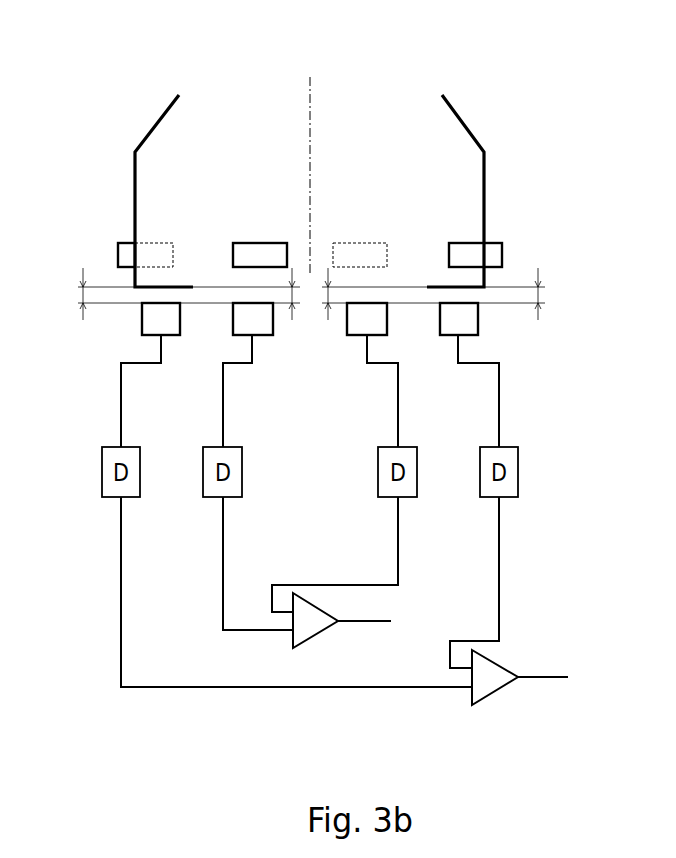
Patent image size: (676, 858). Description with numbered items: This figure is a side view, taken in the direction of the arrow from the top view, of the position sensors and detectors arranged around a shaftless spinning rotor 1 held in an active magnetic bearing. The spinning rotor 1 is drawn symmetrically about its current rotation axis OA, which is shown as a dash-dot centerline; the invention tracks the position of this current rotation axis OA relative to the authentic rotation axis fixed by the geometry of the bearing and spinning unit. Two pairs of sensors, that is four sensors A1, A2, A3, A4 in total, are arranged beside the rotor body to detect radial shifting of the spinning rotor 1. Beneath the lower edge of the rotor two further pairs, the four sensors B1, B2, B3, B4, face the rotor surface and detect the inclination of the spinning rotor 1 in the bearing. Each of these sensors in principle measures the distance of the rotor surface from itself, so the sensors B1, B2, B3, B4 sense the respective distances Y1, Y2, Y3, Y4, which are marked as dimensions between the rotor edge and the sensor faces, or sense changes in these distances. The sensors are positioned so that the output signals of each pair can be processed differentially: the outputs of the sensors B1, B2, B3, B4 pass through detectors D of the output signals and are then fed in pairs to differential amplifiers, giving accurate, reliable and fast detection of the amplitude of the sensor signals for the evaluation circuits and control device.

The spinning rotor 1 is at (457, 117).
The current rotation axis OA is at (310, 112).
The sensor of the position of the spinning rotor A1 is at (127, 257).
The sensor of the position of the spinning rotor A2 is at (490, 255).
The sensor of the position of the spinning rotor A3 is at (240, 253).
The sensor of the position of the spinning rotor A4 is at (378, 255).
The sensor of the position of the spinning rotor B1 is at (143, 327).
The sensor of the position of the spinning rotor B2 is at (472, 322).
The sensor of the position of the spinning rotor B3 is at (240, 325).
The sensor of the position of the spinning rotor B4 is at (380, 325).
The distance Y1 is at (71, 294).
The distance Y2 is at (552, 294).
The distance Y3 is at (296, 308).
The distance Y4 is at (331, 308).